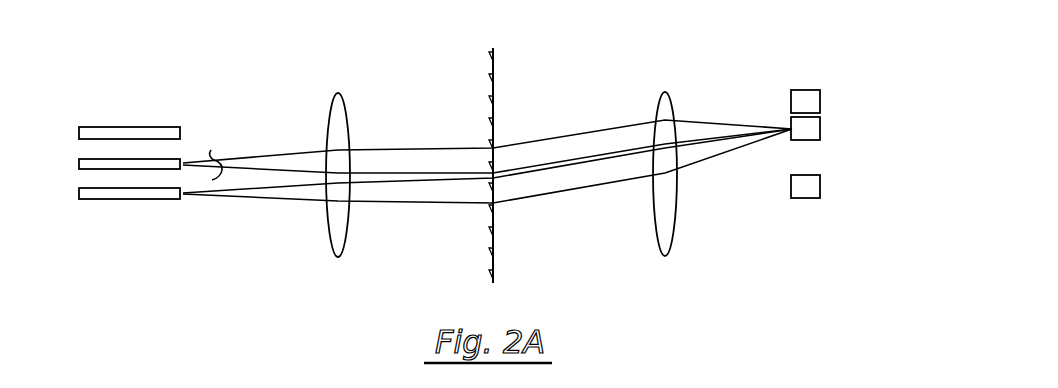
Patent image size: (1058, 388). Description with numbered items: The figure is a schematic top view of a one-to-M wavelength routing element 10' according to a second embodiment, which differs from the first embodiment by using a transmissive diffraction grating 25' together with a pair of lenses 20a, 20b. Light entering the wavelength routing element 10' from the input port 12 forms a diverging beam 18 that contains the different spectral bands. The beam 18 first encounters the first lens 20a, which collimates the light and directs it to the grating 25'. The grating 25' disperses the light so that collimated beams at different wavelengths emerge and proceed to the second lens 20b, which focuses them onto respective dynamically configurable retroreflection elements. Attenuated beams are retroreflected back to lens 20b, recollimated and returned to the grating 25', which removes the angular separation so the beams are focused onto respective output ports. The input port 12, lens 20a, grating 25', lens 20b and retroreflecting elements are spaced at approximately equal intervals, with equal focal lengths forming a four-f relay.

The input port 12 is at (181, 157).
The diverging beam 18 is at (220, 153).
The wavelength routing element 10' is at (487, 211).
The first lens 20a is at (348, 122).
The transmissive diffraction grating 25' is at (531, 145).
The second lens 20b is at (667, 101).